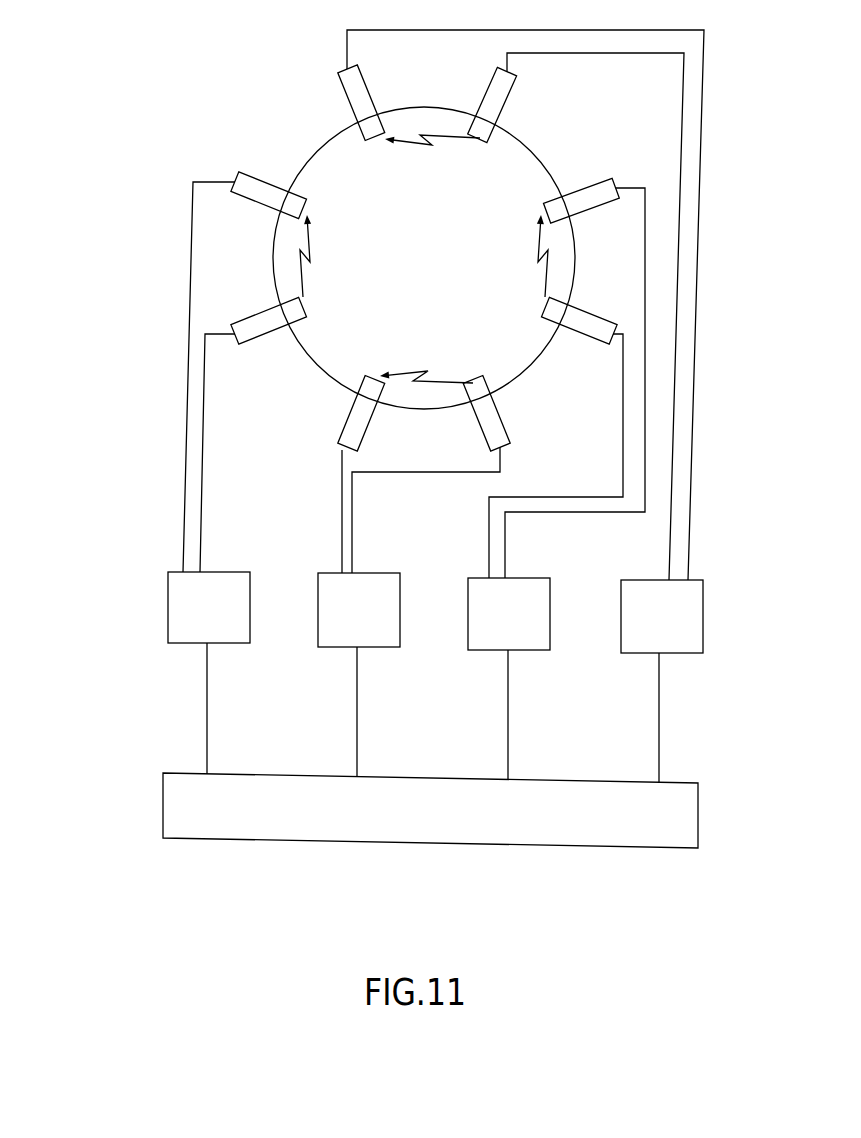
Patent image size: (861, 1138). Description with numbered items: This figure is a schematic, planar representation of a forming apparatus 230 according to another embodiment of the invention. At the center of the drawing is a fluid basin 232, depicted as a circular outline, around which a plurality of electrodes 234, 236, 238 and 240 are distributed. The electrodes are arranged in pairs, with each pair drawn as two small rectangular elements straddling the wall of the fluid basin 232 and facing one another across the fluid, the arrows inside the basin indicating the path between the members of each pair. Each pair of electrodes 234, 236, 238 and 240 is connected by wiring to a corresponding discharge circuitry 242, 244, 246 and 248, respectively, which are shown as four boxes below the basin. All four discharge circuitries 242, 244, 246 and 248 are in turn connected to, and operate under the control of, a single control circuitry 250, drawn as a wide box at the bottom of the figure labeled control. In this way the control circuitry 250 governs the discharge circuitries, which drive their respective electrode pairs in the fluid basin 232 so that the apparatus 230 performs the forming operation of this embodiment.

The apparatus 230 is at (120, 436).
The fluid basin 232 is at (387, 218).
The electrodes 234 is at (478, 100).
The electrodes 236 is at (593, 328).
The electrodes 238 is at (487, 428).
The electrodes 240 is at (252, 318).
The discharge circuitry 242 is at (680, 645).
The discharge circuitry 244 is at (527, 647).
The discharge circuitry 246 is at (377, 645).
The discharge circuitry 248 is at (228, 645).
The control circuitry 250 is at (647, 848).